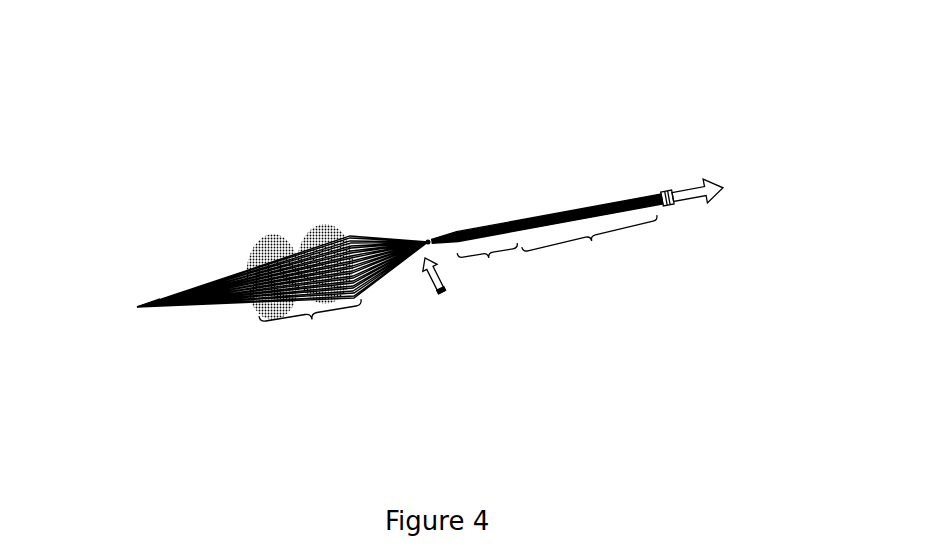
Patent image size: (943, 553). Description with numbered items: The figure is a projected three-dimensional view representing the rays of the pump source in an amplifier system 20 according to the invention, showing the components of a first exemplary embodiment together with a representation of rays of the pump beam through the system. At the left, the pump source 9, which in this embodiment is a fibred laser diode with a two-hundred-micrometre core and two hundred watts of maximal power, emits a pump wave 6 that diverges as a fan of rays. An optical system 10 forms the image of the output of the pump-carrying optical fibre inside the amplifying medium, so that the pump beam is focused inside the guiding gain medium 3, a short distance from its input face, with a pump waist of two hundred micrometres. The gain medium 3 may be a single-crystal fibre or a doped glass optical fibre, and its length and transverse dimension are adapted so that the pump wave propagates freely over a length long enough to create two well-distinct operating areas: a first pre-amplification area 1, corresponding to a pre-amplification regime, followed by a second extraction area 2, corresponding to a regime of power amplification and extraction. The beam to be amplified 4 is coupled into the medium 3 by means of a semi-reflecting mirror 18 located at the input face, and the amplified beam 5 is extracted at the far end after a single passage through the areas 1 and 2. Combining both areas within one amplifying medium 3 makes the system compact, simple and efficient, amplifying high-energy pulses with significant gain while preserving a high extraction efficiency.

The pre-amplification area 1 is at (487, 269).
The extraction area 2 is at (589, 249).
The guiding gain medium 3 is at (537, 202).
The beam to be amplified 4 is at (440, 303).
The amplified beam 5 is at (731, 178).
The pump wave 6 is at (213, 263).
The pump source 9 is at (128, 313).
The optical system 10 is at (313, 320).
The semi-reflecting mirror 18 is at (428, 240).
The amplifier system 20 is at (355, 100).